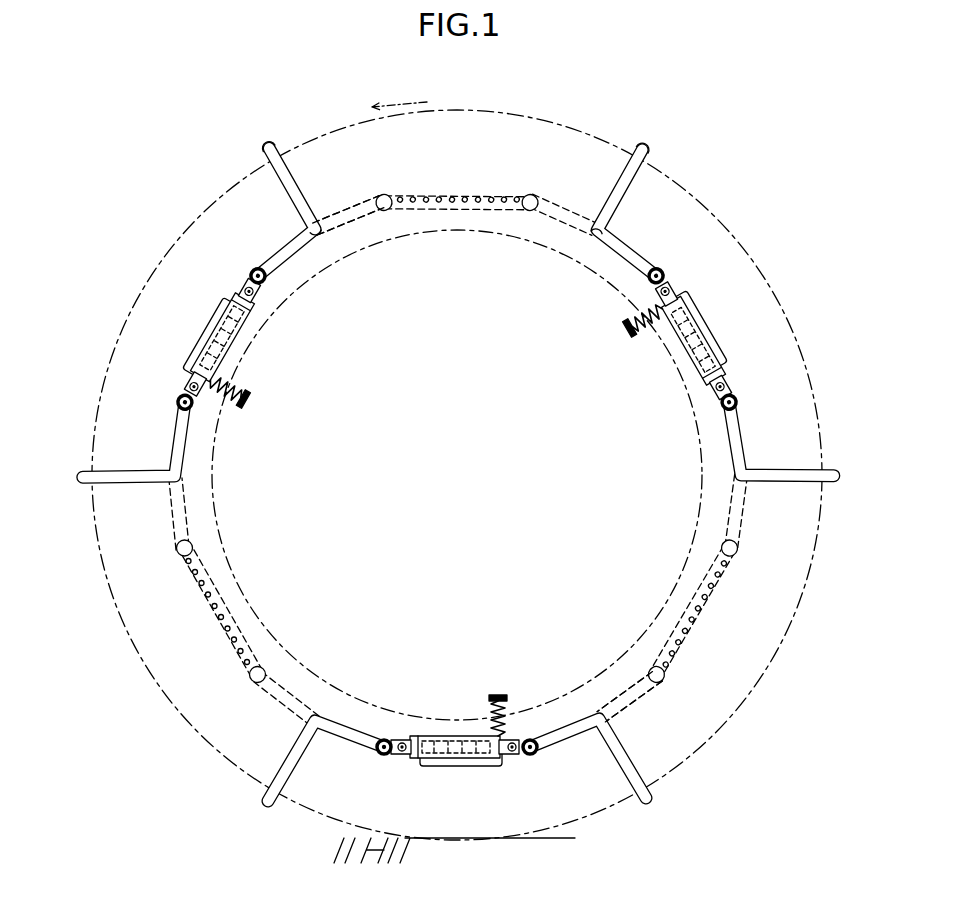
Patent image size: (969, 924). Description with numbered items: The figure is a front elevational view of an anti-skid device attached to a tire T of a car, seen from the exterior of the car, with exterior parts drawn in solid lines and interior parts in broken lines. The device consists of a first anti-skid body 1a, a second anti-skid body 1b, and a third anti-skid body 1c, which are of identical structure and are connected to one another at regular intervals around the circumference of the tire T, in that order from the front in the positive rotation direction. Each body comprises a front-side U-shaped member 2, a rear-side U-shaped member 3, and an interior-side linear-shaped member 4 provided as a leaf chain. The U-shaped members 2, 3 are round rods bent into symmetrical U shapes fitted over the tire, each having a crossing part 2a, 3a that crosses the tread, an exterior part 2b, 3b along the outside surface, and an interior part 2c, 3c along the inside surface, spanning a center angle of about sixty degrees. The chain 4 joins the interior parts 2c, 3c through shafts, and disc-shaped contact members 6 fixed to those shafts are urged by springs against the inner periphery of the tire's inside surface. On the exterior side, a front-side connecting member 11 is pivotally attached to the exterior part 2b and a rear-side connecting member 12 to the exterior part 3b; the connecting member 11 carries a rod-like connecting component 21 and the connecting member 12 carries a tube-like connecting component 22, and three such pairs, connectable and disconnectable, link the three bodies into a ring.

The tire T is at (183, 230).
The first anti-skid body 1a is at (531, 171).
The second anti-skid body 1b is at (720, 656).
The third anti-skid body 1c is at (197, 666).
The front-side U-shaped member 2 is at (293, 178).
The crossing part 2a is at (266, 148).
The exterior part 2b is at (298, 233).
The interior part 2c is at (327, 220).
The rear-side U-shaped member 3 is at (630, 165).
The crossing part 3a is at (647, 145).
The exterior part 3b is at (618, 233).
The interior part 3c is at (588, 218).
The interior-side linear-shaped member 4 is at (227, 607).
The contact member 6 is at (186, 408).
The front-side connecting member 11 is at (255, 283).
The rear-side connecting member 12 is at (180, 400).
The rod-like connecting component 21 is at (231, 361).
The tube-like connecting component 22 is at (236, 333).